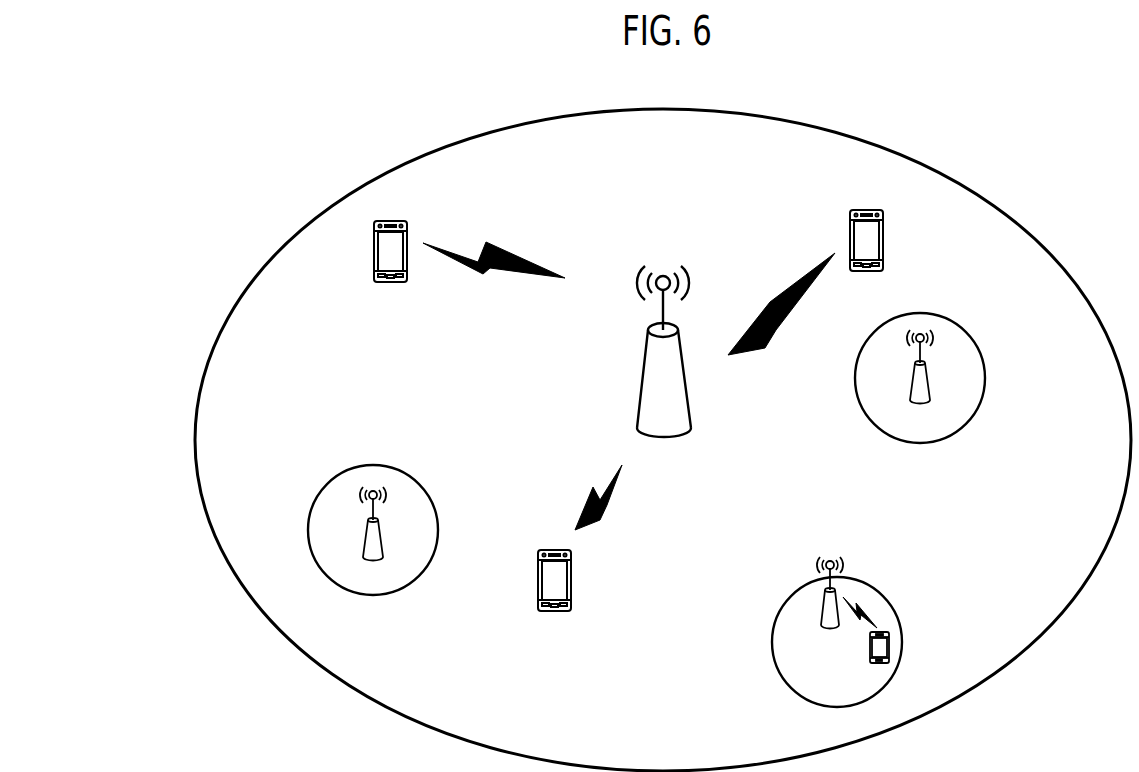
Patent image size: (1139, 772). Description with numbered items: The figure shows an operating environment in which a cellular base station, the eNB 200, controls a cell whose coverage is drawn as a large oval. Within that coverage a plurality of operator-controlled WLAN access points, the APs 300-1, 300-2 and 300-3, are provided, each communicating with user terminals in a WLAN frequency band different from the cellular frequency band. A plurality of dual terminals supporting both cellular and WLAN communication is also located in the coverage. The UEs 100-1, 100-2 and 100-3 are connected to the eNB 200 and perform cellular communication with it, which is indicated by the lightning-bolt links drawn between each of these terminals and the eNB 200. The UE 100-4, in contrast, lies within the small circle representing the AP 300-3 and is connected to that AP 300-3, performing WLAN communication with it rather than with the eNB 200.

The UE 100-1 is at (407, 234).
The UE 100-2 is at (571, 577).
The UE 100-3 is at (883, 248).
The UE 100-4 is at (890, 648).
The eNB 200 is at (643, 368).
The AP 300-1 is at (385, 540).
The AP 300-2 is at (931, 382).
The AP 300-3 is at (821, 612).